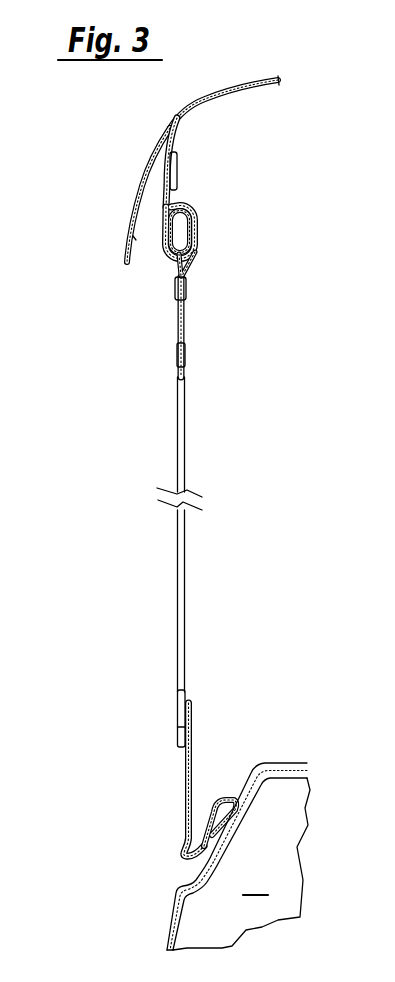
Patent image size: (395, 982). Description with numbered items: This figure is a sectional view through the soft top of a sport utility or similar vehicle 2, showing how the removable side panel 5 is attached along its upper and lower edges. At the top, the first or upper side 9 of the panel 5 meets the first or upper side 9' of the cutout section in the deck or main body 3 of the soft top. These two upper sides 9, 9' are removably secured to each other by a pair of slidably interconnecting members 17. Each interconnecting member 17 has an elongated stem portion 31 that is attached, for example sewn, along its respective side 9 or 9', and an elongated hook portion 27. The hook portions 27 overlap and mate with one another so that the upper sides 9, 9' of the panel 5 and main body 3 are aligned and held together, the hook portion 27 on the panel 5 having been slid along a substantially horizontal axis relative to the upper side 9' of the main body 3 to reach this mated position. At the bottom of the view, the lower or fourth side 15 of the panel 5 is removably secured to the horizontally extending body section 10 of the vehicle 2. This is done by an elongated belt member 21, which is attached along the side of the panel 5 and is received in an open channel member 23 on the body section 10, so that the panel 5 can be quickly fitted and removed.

The vehicle 2 is at (241, 864).
The main body 3 is at (223, 90).
The side panel 5 is at (148, 511).
The first side 9 is at (194, 405).
The first side of cutout section 9' is at (129, 189).
The horizontally extending body section 10 is at (174, 905).
The fourth side 15 is at (184, 788).
The interconnecting member 17 is at (154, 213).
The belt member 21 is at (236, 823).
The open channel member 23 is at (217, 797).
The hook portion 27 is at (186, 208).
The stem portion 31 is at (150, 165).